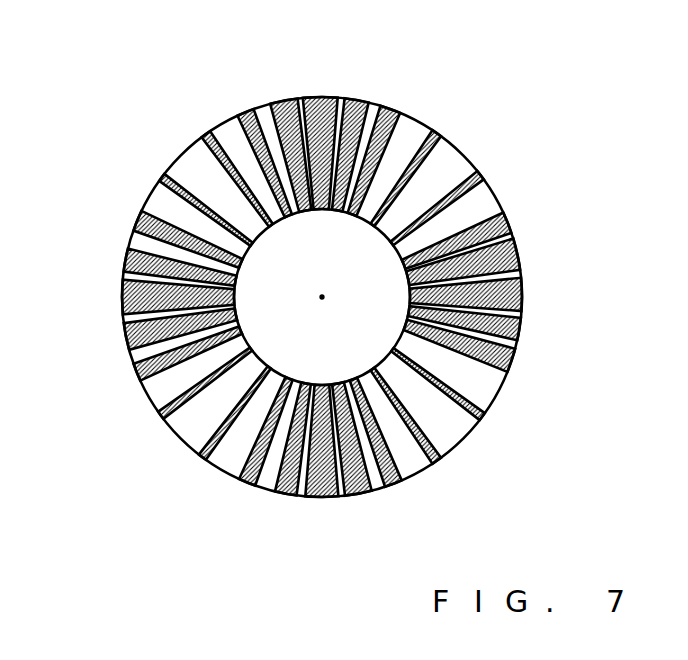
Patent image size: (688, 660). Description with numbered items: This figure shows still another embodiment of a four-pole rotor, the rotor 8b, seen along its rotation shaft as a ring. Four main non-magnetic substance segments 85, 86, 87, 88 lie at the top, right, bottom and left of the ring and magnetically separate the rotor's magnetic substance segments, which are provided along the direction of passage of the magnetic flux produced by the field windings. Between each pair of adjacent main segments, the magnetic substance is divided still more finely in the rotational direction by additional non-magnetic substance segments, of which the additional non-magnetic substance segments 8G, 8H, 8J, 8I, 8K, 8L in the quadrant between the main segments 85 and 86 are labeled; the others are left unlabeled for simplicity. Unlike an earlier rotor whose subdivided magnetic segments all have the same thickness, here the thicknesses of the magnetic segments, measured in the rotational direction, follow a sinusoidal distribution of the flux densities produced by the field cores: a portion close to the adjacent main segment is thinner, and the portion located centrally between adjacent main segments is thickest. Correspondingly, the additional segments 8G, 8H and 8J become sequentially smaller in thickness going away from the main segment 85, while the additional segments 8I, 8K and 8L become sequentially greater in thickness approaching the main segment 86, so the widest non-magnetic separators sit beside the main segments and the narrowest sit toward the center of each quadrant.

The rotor 8b is at (140, 166).
The main non-magnetic substance segment 85 is at (318, 116).
The main non-magnetic substance segment 86 is at (492, 300).
The main non-magnetic substance segment 87 is at (323, 477).
The main non-magnetic substance segment 88 is at (145, 297).
The additional non-magnetic substance segment 8G is at (362, 116).
The additional non-magnetic substance segment 8H is at (400, 118).
The additional non-magnetic substance segment 8I is at (480, 178).
The additional non-magnetic substance segment 8J is at (440, 134).
The additional non-magnetic substance segment 8K is at (505, 222).
The additional non-magnetic substance segment 8L is at (495, 258).